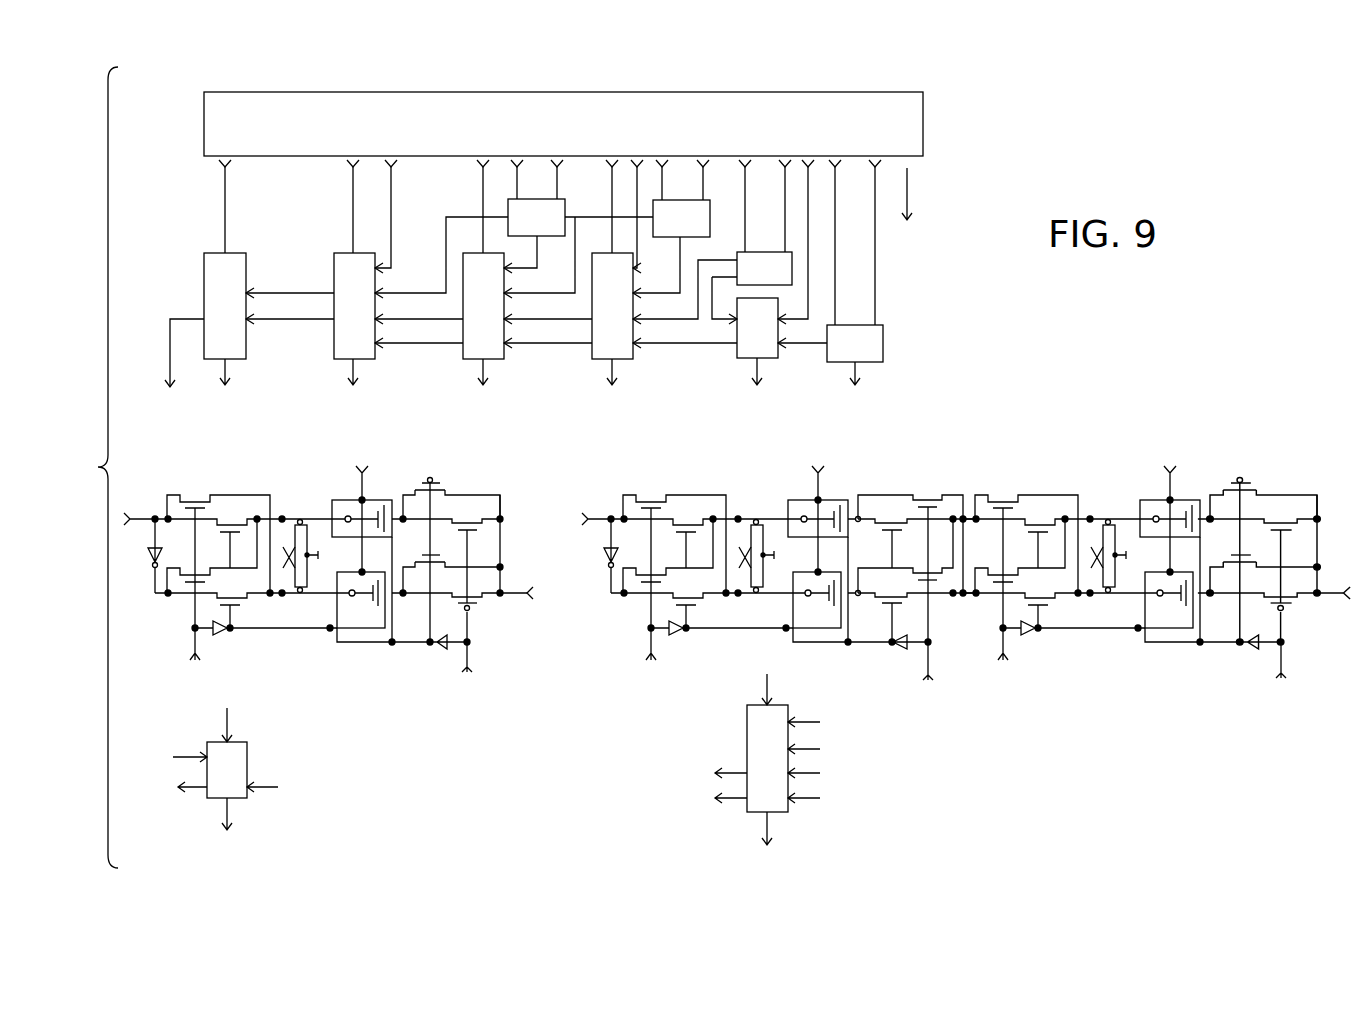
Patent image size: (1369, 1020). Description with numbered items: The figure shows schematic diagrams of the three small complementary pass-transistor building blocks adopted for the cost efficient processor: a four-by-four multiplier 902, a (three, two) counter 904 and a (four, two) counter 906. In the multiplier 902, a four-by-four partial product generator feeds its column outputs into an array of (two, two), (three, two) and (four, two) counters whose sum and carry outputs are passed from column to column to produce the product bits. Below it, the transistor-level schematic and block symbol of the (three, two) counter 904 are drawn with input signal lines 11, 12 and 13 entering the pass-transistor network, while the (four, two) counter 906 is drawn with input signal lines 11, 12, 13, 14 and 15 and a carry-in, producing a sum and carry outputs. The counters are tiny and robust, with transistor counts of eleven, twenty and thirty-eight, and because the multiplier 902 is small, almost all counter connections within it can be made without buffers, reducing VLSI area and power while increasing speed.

The first input signal 11 is at (450, 617).
The second input signal 12 is at (499, 697).
The third input signal 13 is at (593, 719).
The fourth input signal 14 is at (901, 705).
The fifth input signal 15 is at (1281, 672).
The 4×4 multiplier 902 is at (900, 304).
The 3,2 counter 904 is at (336, 792).
The 4,2 counter 906 is at (1036, 722).